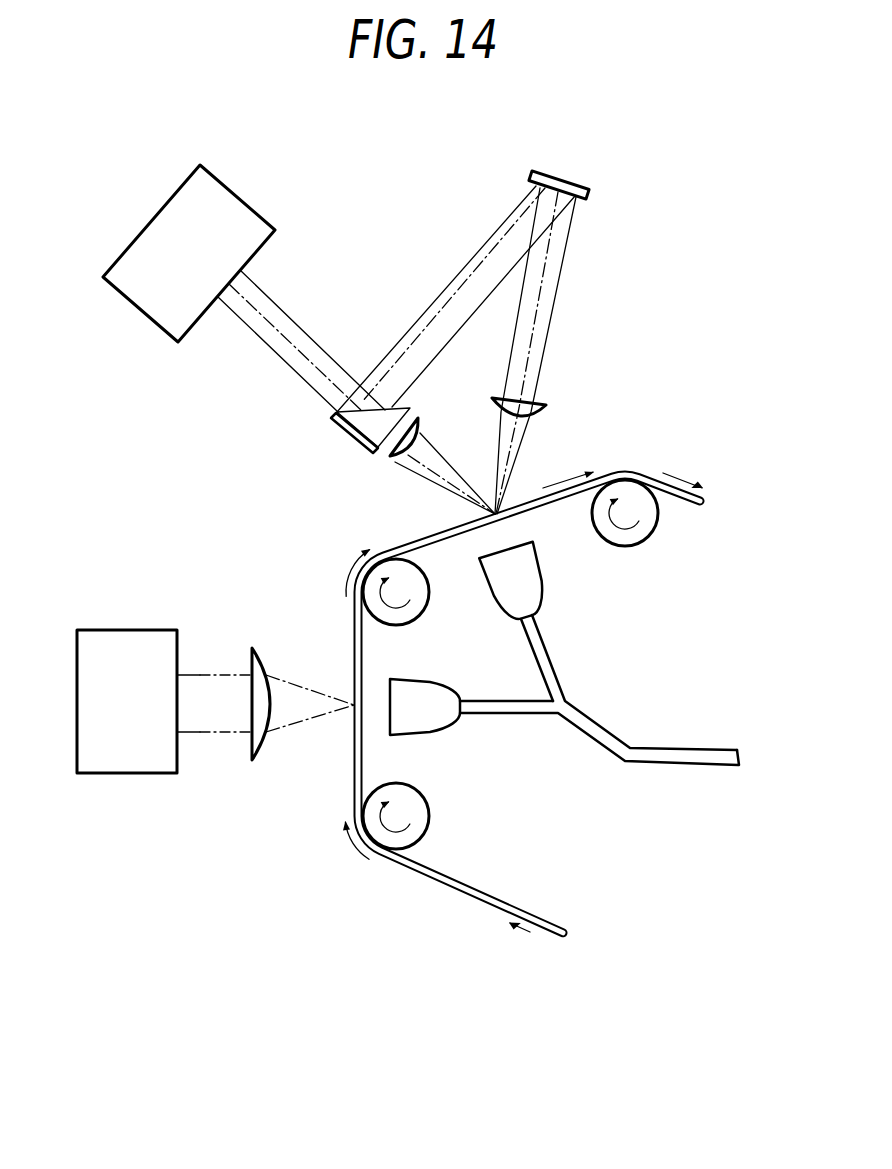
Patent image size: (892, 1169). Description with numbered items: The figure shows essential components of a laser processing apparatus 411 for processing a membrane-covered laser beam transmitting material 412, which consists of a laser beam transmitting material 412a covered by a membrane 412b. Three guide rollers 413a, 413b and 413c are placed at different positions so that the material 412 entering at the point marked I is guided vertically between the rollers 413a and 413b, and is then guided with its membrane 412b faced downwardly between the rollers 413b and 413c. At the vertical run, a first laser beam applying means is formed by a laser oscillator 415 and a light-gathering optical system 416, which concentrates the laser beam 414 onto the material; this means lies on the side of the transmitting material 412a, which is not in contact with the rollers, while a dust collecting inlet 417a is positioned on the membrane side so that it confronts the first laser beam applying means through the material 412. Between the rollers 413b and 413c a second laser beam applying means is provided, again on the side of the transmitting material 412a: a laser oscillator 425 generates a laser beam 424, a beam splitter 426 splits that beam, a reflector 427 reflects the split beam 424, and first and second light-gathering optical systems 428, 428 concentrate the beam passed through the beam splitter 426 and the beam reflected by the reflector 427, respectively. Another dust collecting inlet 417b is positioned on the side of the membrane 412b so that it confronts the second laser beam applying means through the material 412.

The image forming apparatus 411 is at (468, 176).
The membrane-covered laser beam transmitting material 412 is at (509, 742).
The laser beam transmitting material 412a is at (412, 870).
The membrane 412b is at (475, 931).
The roller 413a is at (412, 808).
The roller 413b is at (413, 580).
The roller 413c is at (632, 536).
The light beam 414 is at (223, 733).
The laser oscillator 415 is at (118, 775).
The light-gathering optical system 416 is at (250, 647).
The dust collecting inlet 417a is at (412, 693).
The dust collecting inlet 417b is at (530, 590).
The laser beam 424 is at (307, 333).
The laser oscillator 425 is at (204, 314).
The beam splitter 426 is at (357, 430).
The reflector 427 is at (590, 195).
The light-gathering optical system 428 is at (545, 405).
The recording sheet I is at (533, 938).